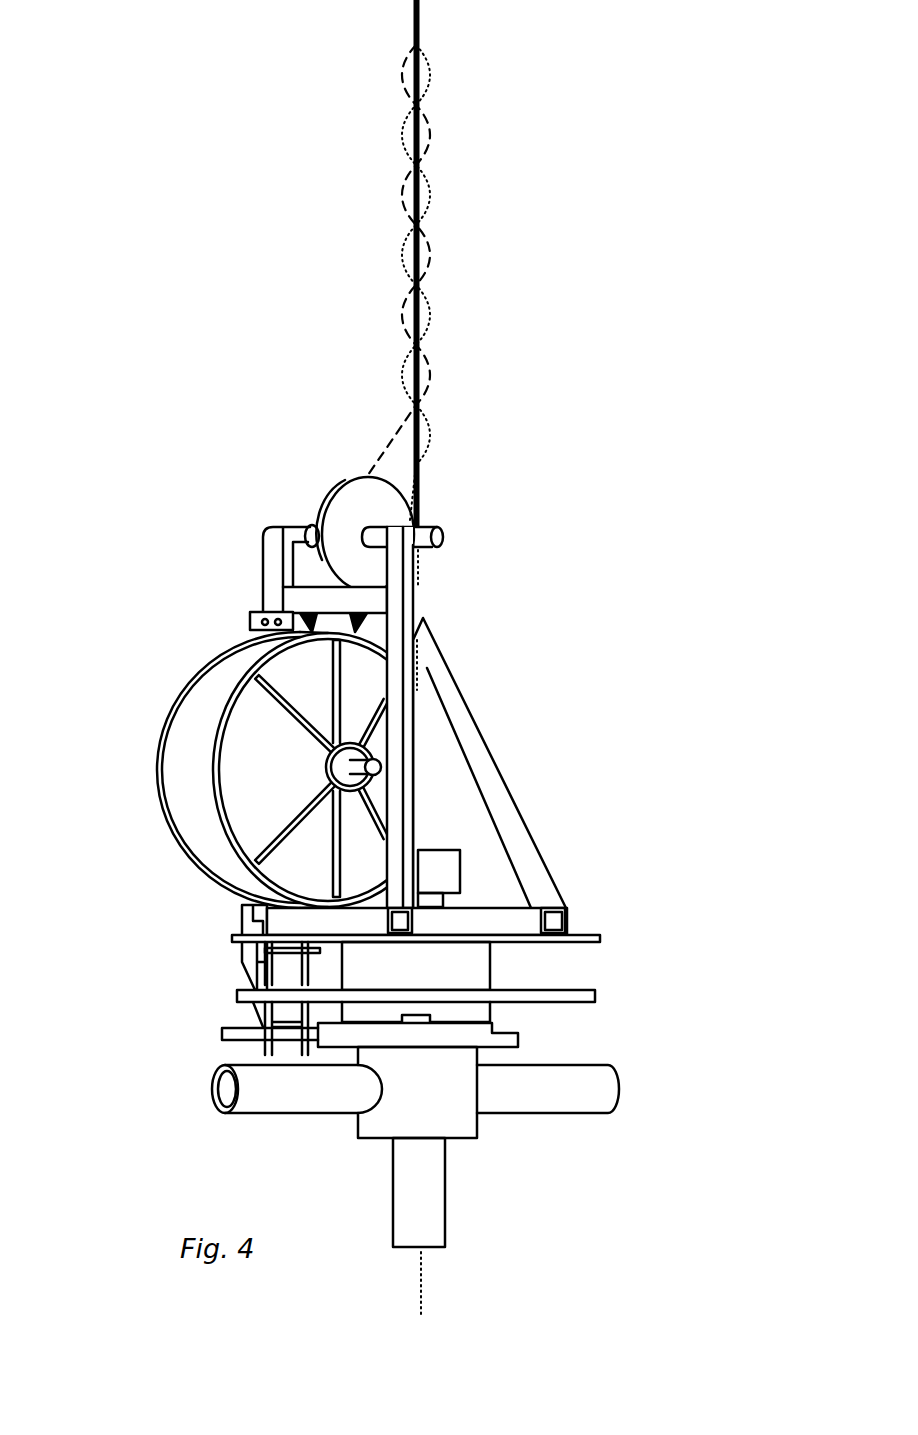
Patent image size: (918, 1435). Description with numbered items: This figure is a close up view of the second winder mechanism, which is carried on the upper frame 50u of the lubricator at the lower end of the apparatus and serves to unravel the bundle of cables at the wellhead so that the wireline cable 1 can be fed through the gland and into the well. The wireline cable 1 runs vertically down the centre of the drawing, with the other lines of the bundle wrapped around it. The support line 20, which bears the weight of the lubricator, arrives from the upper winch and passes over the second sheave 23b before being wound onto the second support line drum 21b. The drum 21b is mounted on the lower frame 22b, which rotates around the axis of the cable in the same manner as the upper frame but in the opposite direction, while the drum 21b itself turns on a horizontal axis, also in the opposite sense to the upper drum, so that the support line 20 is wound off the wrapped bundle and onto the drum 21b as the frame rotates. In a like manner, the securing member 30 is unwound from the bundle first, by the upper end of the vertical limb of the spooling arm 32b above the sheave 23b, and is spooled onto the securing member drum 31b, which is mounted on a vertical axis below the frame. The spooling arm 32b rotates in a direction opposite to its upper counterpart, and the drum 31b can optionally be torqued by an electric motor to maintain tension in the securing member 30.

The wireline cable 1 is at (426, 433).
The support line 20 is at (416, 200).
The securing member 30 is at (380, 455).
The second support line drum 21b is at (172, 763).
The lower frame 22b is at (482, 758).
The second sheave 23b is at (333, 507).
The securing member drum 31b is at (592, 966).
The spooling arm 32b is at (262, 617).
The upper frame 50u is at (435, 1185).